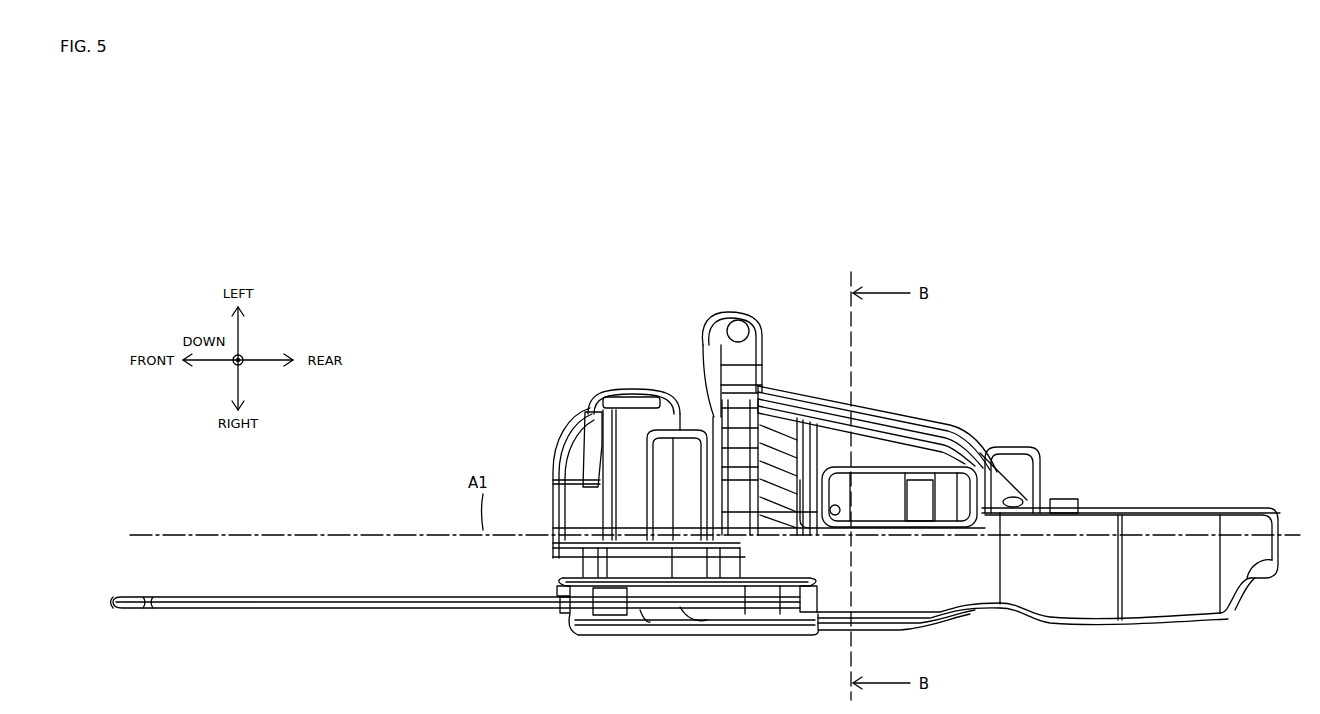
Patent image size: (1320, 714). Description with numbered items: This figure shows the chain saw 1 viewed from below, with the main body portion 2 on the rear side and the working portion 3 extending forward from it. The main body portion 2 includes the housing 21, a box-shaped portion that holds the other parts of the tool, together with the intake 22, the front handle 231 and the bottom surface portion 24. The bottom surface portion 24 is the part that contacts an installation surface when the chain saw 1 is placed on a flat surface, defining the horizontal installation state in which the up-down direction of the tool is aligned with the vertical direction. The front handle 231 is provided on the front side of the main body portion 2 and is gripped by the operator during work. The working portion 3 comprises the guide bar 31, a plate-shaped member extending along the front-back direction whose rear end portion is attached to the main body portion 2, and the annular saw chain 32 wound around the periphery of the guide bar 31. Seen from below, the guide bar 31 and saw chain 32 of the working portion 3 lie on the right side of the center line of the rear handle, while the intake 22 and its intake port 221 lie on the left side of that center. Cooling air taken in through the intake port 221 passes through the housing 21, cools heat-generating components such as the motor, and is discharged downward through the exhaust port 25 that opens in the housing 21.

The chain saw 1 is at (1168, 292).
The main body portion 2 is at (1062, 428).
The working portion 3 is at (362, 620).
The housing 21 is at (640, 562).
The intake 22 is at (928, 408).
The intake port 221 is at (880, 410).
The front handle 231 is at (700, 322).
The bottom surface portion 24 is at (1180, 587).
The exhaust port 25 is at (780, 440).
The guide bar 31 is at (246, 608).
The saw chain 32 is at (114, 604).